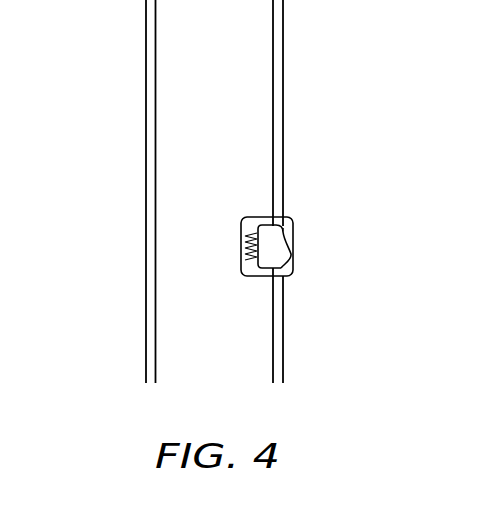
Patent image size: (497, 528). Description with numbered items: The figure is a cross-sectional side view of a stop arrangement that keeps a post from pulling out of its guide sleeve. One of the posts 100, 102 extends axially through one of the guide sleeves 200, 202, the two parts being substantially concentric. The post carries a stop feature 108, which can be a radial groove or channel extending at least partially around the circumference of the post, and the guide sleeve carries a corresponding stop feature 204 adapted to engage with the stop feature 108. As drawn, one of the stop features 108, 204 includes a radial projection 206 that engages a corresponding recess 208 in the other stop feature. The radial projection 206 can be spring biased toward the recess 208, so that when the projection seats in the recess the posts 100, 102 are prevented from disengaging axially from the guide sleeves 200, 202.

The post 100 is at (215, 35).
The post 102 is at (267, 48).
The stop feature 108 is at (277, 221).
The guide sleeve 200 is at (124, 49).
The guide sleeve 202 is at (400, 49).
The stop feature 204 is at (288, 258).
The radial projection 206 is at (273, 257).
The recess 208 is at (293, 241).